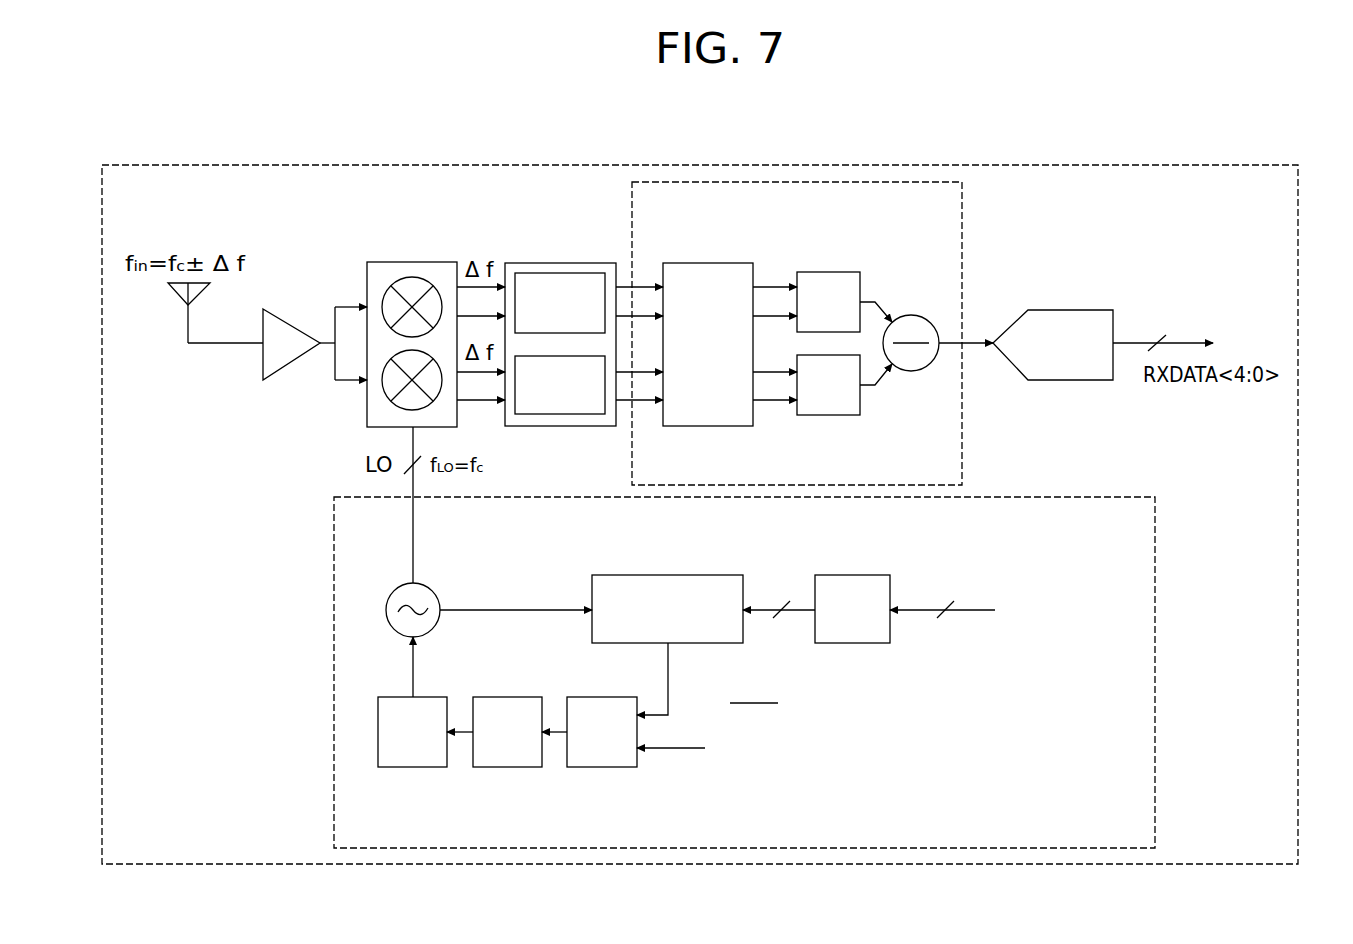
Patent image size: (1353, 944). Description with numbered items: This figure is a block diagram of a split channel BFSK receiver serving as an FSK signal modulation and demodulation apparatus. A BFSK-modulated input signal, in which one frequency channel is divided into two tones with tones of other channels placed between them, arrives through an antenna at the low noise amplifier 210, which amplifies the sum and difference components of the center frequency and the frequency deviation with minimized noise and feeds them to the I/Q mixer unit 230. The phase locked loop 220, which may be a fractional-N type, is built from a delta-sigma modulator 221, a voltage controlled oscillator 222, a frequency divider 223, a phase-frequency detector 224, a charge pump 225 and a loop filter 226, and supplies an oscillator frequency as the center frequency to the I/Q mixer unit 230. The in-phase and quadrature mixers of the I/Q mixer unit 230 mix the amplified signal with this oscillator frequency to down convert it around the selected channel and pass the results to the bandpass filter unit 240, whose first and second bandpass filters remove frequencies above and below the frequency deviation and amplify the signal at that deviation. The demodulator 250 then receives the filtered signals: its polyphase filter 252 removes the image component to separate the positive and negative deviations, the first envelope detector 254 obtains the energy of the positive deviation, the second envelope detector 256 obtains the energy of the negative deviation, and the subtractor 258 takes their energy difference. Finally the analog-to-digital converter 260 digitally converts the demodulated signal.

The low noise amplifier 210 is at (262, 366).
The phase locked loop 220 is at (1070, 496).
The delta-sigma modulator 221 is at (849, 575).
The voltage controlled oscillator 222 is at (437, 590).
The frequency divider 223 is at (665, 575).
The phase-frequency detector 224 is at (600, 767).
The charge pump 225 is at (507, 767).
The loop filter 226 is at (412, 767).
The I/Q mixer unit 230 is at (362, 418).
The bandpass filter unit 240 is at (561, 263).
The demodulator 250 is at (962, 222).
The polyphase filter 252 is at (706, 263).
The first envelope detector 254 is at (825, 272).
The second envelope detector 256 is at (827, 415).
The subtractor 258 is at (916, 371).
The analog-to-digital converter 260 is at (1070, 310).